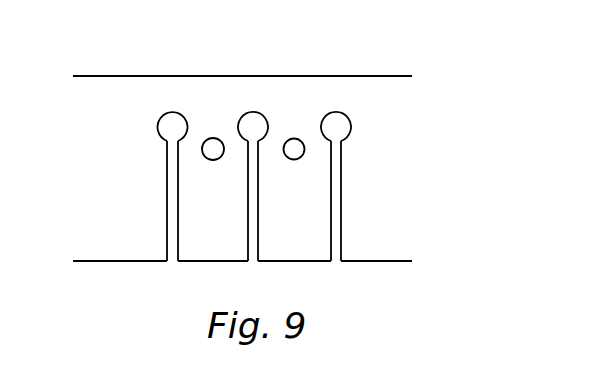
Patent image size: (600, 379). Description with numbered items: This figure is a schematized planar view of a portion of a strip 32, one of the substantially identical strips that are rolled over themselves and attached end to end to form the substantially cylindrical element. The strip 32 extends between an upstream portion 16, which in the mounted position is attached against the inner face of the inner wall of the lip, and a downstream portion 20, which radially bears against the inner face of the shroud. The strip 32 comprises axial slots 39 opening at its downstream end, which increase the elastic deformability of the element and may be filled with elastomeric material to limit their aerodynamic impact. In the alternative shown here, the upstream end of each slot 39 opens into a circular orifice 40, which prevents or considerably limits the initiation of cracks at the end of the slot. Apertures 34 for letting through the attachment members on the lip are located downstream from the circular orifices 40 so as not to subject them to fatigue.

The upstream portion 16 is at (288, 146).
The downstream portion 20 is at (400, 242).
The strip 32 is at (363, 100).
The apertures 34 is at (212, 164).
The axial slots 39 is at (172, 198).
The circular orifice 40 is at (181, 107).